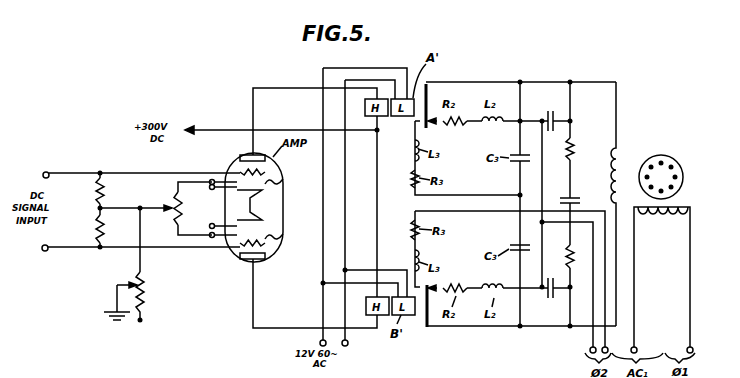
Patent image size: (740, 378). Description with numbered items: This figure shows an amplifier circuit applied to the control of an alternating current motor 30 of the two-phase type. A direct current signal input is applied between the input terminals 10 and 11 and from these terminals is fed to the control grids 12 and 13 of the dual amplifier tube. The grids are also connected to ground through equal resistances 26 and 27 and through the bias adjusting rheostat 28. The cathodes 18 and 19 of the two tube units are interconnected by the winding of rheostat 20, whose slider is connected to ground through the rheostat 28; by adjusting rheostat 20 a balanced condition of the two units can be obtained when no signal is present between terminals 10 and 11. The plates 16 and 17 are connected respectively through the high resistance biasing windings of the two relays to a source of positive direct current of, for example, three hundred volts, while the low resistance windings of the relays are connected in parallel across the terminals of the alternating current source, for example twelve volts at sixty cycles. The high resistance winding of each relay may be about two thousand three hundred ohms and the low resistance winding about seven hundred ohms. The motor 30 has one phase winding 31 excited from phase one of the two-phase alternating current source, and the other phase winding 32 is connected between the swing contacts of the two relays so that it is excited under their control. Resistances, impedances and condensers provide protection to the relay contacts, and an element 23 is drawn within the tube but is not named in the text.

The input terminal 10 is at (52, 166).
The input terminal 11 is at (43, 251).
The control grid 12 is at (238, 171).
The control grid 13 is at (238, 246).
The plate 16 is at (246, 155).
The plate 17 is at (250, 260).
The cathode 18 is at (283, 180).
The cathode 19 is at (283, 236).
The rheostat 20 is at (170, 194).
The common anode 23 is at (250, 205).
The resistance 26 is at (95, 190).
The resistance 27 is at (96, 226).
The bias adjusting rheostat 28 is at (146, 297).
The motor 30 is at (661, 155).
The phase winding 31 is at (661, 222).
The phase winding 32 is at (608, 178).